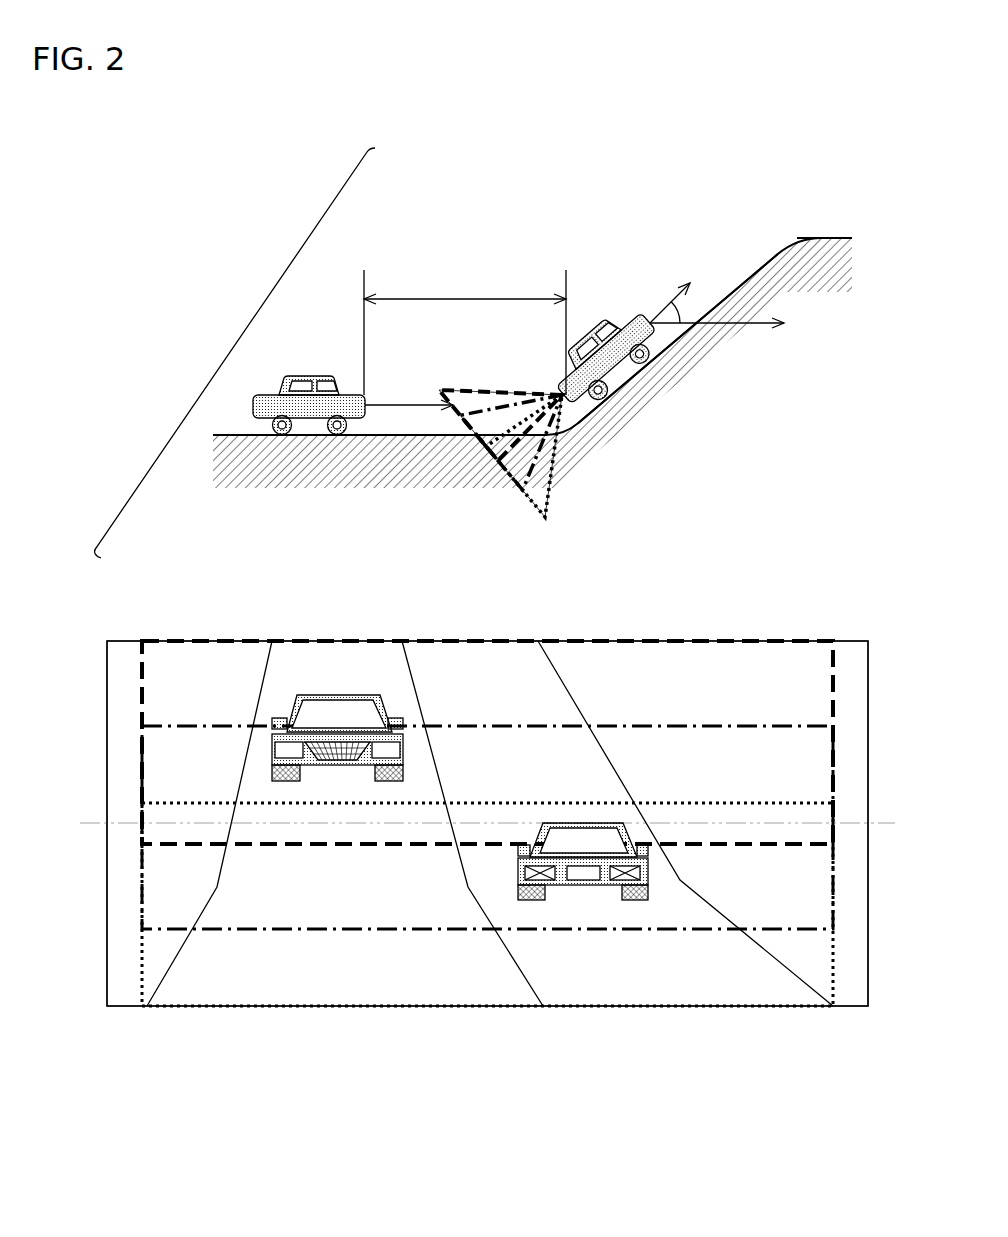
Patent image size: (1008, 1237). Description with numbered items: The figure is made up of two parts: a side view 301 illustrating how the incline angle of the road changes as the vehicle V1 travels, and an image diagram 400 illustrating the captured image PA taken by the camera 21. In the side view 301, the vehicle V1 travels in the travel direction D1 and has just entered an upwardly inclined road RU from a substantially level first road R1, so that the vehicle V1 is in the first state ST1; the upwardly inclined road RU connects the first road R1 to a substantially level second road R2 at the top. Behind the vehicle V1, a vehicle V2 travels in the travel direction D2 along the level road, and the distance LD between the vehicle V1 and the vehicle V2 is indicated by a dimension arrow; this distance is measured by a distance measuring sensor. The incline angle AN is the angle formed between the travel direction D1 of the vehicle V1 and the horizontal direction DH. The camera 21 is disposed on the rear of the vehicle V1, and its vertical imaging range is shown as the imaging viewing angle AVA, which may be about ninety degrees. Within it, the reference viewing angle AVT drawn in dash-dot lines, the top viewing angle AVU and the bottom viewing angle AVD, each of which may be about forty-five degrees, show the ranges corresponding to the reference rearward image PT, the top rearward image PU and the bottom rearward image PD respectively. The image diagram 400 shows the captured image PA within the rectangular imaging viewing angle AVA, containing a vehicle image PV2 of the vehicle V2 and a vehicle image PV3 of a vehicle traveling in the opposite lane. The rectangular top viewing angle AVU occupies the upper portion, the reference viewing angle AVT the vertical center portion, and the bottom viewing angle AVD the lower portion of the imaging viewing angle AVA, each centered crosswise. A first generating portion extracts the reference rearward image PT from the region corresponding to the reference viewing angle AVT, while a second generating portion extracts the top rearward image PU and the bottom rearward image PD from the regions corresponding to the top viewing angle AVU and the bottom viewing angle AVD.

The side view 301 is at (387, 269).
The image diagram 400 is at (162, 626).
The camera 21 is at (596, 415).
The first state ST1 is at (240, 338).
The vehicle V1 is at (586, 342).
The vehicle V2 is at (299, 376).
The travel direction D1 is at (663, 300).
The travel direction D2 is at (409, 390).
The horizontal direction DH is at (738, 323).
The incline angle AN is at (695, 306).
The distance LD is at (465, 287).
The first road R1 is at (375, 465).
The second road R2 is at (837, 240).
The upwardly inclined road RU is at (670, 352).
The imaging viewing angle AVA is at (548, 438).
The top viewing angle AVU is at (483, 407).
The reference viewing angle AVT is at (503, 467).
The bottom viewing angle AVD is at (552, 480).
The captured image PA is at (838, 1007).
The top rearward image PU is at (833, 683).
The reference rearward image PT is at (684, 728).
The bottom rearward image PD is at (833, 964).
The vehicle image PV2 is at (322, 694).
The vehicle image PV3 is at (650, 868).